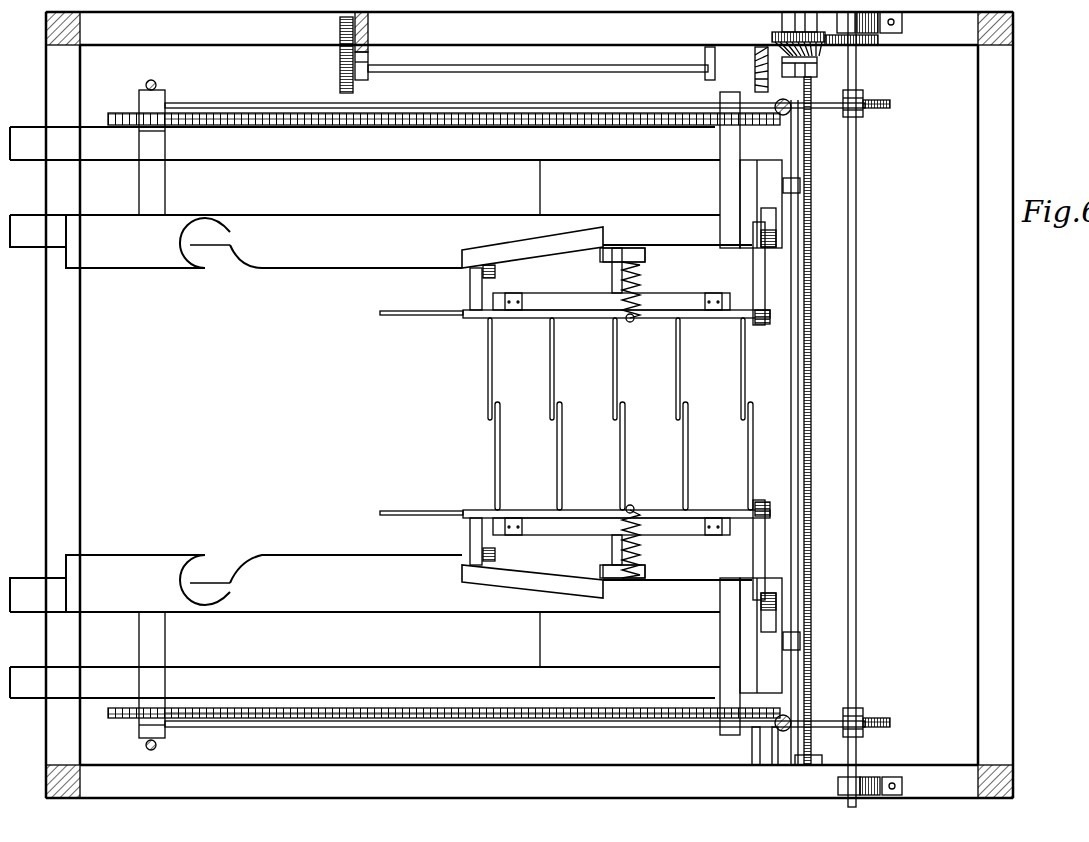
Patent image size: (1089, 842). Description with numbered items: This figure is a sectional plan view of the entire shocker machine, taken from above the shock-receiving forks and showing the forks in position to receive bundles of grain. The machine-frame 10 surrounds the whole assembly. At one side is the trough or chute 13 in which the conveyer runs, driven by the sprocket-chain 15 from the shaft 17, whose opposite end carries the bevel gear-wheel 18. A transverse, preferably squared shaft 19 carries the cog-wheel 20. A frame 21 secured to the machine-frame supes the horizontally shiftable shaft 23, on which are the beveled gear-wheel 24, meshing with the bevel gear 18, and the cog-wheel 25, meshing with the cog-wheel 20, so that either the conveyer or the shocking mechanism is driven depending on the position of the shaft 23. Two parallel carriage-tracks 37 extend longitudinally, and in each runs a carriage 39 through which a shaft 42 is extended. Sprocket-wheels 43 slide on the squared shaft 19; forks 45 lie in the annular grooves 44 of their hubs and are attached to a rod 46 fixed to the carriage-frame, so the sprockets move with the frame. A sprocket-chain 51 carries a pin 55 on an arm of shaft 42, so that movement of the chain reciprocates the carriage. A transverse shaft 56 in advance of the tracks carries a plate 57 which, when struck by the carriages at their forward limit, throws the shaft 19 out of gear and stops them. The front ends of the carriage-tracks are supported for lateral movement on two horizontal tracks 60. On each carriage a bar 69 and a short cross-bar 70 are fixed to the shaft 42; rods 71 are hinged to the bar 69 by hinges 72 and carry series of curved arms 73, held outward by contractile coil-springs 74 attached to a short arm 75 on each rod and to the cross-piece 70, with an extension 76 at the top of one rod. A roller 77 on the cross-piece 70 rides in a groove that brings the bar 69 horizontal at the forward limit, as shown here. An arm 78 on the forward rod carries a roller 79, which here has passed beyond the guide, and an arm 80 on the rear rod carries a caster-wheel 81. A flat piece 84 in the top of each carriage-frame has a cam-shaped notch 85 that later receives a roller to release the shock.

The machine-frame 10 is at (52, 38).
The trough or chute 13 is at (368, 24).
The sprocket-chain 15 is at (340, 70).
The shaft 17 is at (420, 72).
The bevel gear-wheel 18 is at (755, 84).
The shaft 19 is at (856, 160).
The cog-wheel 20 is at (868, 47).
The frame 21 is at (782, 22).
The shaft 23 is at (779, 409).
The beveled gear-wheel 24 is at (816, 50).
The cog-wheel 25 is at (772, 38).
The carriage-tracks 37 is at (365, 412).
The carriage 39 is at (400, 413).
The shaft 42 is at (612, 280).
The sprocket-wheels 43 is at (872, 102).
The annular grooves 44 is at (866, 113).
The forks 45 is at (848, 117).
The rod 46 is at (258, 113).
The sprocket-chain 51 is at (284, 121).
The pin 55 is at (662, 120).
The shaft 56 is at (806, 160).
The plate 57 is at (800, 300).
The horizontal tracks 60 is at (760, 748).
The bar 69 is at (545, 293).
The cross-bar 70 is at (605, 255).
The rod 71 is at (528, 319).
The hinges 72 is at (512, 295).
The curved arms 73 is at (492, 384).
The contractile coil-springs 74 is at (640, 283).
The short arm 75 is at (632, 322).
The extension 76 is at (425, 316).
The roller 77 is at (690, 247).
The arm 78 is at (755, 268).
The roller 79 is at (768, 208).
The arm 80 is at (470, 293).
The caster-wheel 81 is at (495, 272).
The flat piece 84 is at (240, 413).
The cam-shaped notch 85 is at (228, 234).